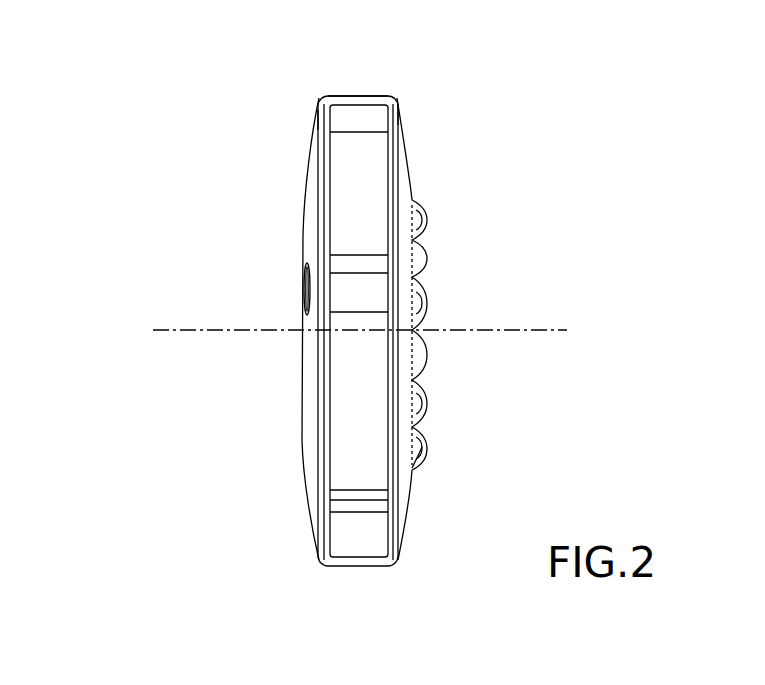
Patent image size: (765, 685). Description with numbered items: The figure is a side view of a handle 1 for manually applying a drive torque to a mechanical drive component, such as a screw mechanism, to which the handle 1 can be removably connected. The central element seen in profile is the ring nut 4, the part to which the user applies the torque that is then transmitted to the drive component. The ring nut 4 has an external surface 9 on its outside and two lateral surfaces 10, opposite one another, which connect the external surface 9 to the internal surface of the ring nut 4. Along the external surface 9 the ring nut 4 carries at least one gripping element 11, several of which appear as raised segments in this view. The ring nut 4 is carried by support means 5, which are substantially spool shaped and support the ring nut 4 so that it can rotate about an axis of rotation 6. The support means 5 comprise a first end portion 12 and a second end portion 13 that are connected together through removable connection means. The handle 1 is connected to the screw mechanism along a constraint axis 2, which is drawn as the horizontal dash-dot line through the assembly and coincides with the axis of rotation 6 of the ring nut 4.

The handle 1 is at (144, 162).
The constraint axis 2 is at (370, 292).
The ring nut 4 is at (376, 80).
The support means 5 is at (450, 242).
The axis of rotation 6 is at (538, 328).
The external surface 9 is at (341, 95).
The lateral surfaces 10 is at (312, 119).
The gripping element 11 is at (380, 141).
The first end portion 12 is at (412, 468).
The second end portion 13 is at (305, 465).